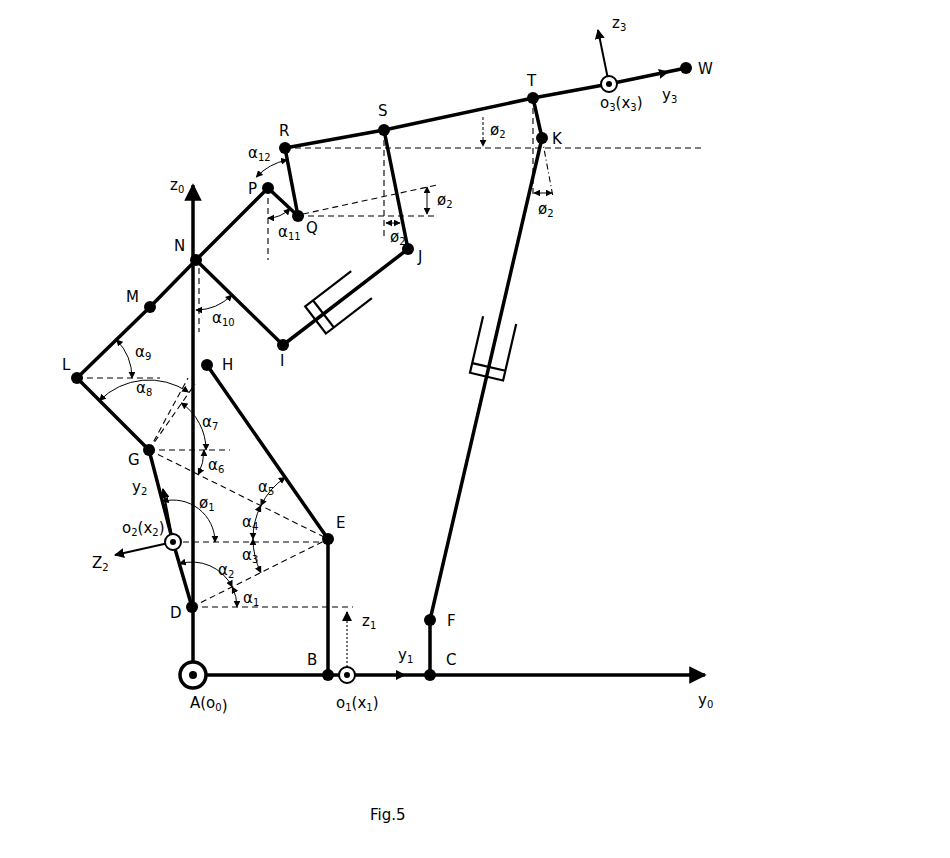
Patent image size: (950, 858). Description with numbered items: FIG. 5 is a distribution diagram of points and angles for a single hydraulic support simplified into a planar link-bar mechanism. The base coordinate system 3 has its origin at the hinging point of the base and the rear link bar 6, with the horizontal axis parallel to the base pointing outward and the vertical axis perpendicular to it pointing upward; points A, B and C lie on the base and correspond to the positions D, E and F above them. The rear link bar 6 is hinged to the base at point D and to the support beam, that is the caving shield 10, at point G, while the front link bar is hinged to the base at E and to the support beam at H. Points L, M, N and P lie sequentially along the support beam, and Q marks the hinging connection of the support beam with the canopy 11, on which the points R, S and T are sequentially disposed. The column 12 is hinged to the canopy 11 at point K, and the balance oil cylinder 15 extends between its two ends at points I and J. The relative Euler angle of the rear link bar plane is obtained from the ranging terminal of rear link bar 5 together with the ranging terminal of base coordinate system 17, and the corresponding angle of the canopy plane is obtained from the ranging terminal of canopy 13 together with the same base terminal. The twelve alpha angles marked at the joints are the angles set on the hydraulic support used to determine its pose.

The base coordinate system 3 is at (564, 679).
The ranging terminal of rear link bar 5 is at (163, 549).
The rear link bar 6 is at (146, 470).
The caving shield 10 is at (120, 434).
The canopy 11 is at (580, 98).
The column 12 is at (512, 369).
The ranging terminal of canopy 13 is at (641, 86).
The balance oil cylinder 15 is at (344, 332).
The ranging terminal of base coordinate system 17 is at (375, 680).